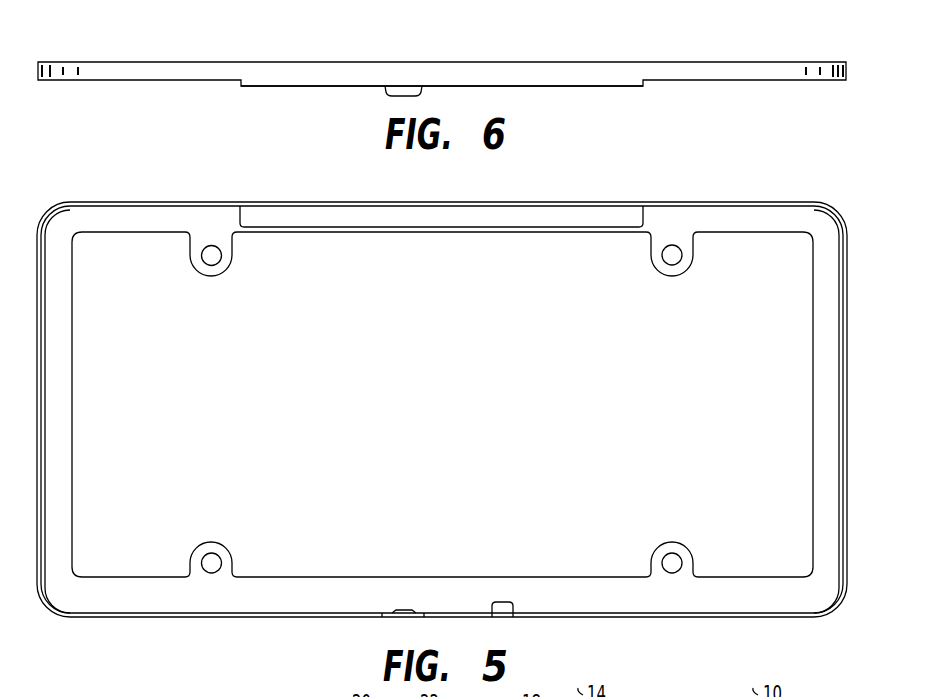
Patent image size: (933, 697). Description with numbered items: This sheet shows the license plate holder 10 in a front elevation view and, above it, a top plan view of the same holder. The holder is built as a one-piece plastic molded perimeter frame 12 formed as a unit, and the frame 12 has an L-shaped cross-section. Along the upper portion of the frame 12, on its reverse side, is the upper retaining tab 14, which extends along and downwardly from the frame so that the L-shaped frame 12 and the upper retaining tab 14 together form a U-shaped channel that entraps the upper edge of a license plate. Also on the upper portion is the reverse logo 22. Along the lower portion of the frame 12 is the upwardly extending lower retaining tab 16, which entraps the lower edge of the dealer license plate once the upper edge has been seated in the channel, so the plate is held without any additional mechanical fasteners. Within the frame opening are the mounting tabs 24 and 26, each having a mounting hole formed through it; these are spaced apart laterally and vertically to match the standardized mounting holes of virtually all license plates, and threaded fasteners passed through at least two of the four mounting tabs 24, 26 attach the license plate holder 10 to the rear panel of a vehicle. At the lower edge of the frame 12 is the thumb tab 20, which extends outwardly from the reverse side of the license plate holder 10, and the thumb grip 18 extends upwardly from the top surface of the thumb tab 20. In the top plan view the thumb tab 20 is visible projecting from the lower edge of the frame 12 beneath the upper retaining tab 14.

In FIG. 6, the license plate holder 10 is at (478, 58).
In FIG. 5, the license plate holder 10 is at (791, 196).
In FIG. 6, the perimeter frame 12 is at (778, 62).
In FIG. 5, the perimeter frame 12 is at (847, 315).
In FIG. 6, the upper retaining tab 14 is at (580, 86).
In FIG. 5, the upper retaining tab 14 is at (553, 210).
In FIG. 5, the lower retaining tab 16 is at (500, 602).
In FIG. 5, the thumb grip 18 is at (405, 610).
In FIG. 6, the thumb tab 20 is at (385, 95).
In FIG. 5, the thumb tab 20 is at (390, 618).
In FIG. 5, the reverse logo 22 is at (430, 222).
In FIG. 5, the mounting tab 24 is at (232, 267).
In FIG. 5, the mounting tab 26 is at (232, 556).